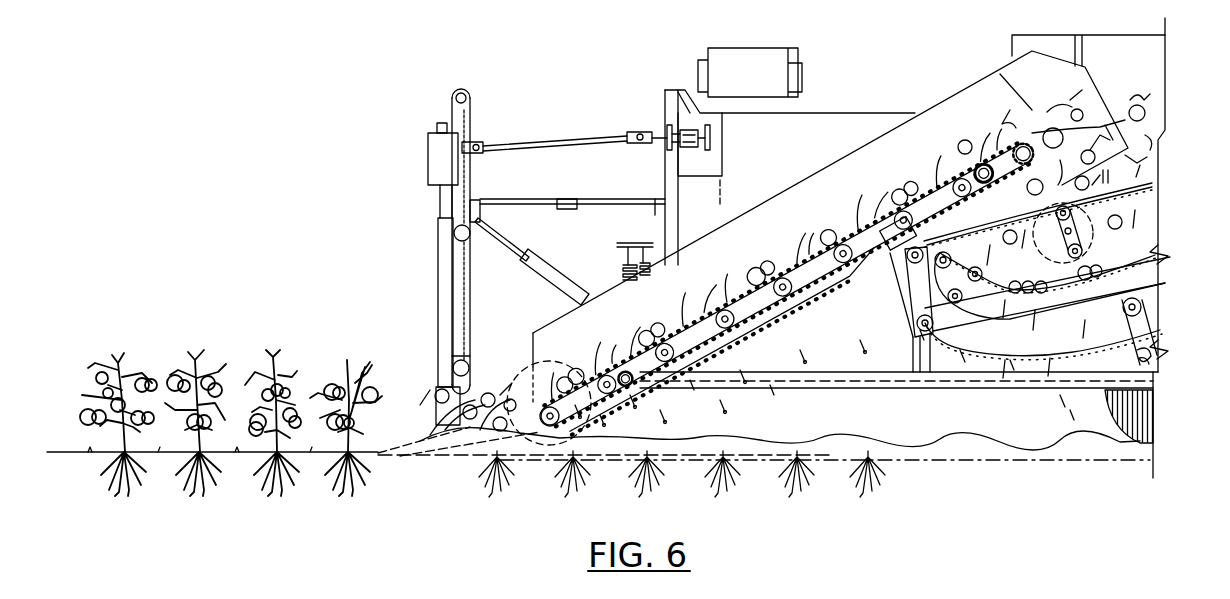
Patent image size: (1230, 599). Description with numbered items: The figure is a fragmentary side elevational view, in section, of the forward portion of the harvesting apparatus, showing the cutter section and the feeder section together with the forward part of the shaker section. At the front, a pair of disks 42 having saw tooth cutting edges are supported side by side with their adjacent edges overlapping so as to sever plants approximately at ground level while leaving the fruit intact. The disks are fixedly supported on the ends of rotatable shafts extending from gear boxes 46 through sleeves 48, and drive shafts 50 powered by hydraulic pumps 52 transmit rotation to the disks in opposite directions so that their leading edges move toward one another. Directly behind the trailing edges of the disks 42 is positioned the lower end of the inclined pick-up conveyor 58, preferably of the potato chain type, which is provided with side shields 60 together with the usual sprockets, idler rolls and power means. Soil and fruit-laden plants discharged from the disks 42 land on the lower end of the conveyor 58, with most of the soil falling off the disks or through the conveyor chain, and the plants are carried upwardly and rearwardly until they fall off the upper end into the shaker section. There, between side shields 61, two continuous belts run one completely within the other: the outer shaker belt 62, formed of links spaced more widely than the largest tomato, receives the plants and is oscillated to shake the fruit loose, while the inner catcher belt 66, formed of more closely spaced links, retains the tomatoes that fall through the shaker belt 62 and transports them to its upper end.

The disks 42 is at (380, 457).
The gear boxes 46 is at (428, 160).
The sleeves 48 is at (440, 257).
The drive shafts 50 is at (567, 135).
The hydraulic pumps 52 is at (690, 142).
The pick-up conveyor 58 is at (830, 278).
The side shields 60 is at (958, 107).
The side shields 61 is at (1138, 237).
The shaker belt 62 is at (1007, 360).
The catcher belt 66 is at (1138, 268).